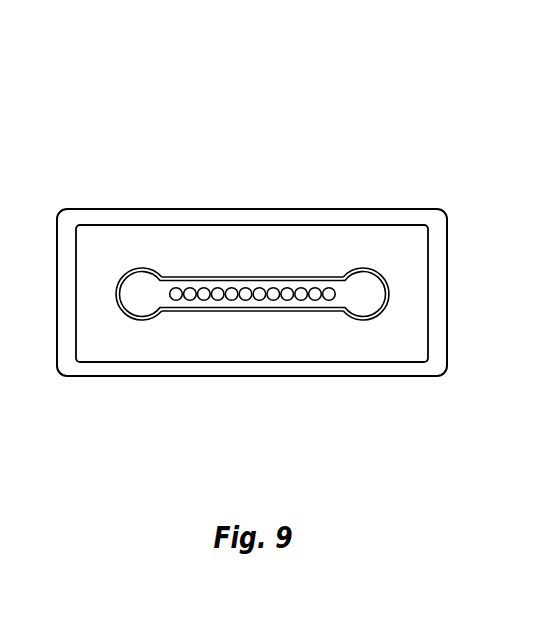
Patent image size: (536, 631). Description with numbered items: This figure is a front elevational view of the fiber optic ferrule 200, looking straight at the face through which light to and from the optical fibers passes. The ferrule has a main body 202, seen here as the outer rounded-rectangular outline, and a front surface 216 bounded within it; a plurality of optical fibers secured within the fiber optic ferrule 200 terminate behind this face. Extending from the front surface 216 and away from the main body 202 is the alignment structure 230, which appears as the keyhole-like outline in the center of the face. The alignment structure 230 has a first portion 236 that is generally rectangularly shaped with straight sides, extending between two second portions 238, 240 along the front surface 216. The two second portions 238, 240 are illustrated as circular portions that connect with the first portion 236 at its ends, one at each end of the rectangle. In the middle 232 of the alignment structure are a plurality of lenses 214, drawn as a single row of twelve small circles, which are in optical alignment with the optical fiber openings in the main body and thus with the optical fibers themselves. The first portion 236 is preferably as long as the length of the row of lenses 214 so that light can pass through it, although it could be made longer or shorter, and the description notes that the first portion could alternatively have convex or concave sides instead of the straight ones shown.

The fiber optic ferrule 200 is at (343, 121).
The main body 202 is at (438, 330).
The lenses 214 is at (175, 296).
The front surface 216 is at (420, 256).
The alignment structure 230 is at (248, 318).
The middle 232 is at (252, 268).
The first portion 236 is at (305, 278).
The second portion 238 is at (373, 268).
The second portion 240 is at (125, 273).